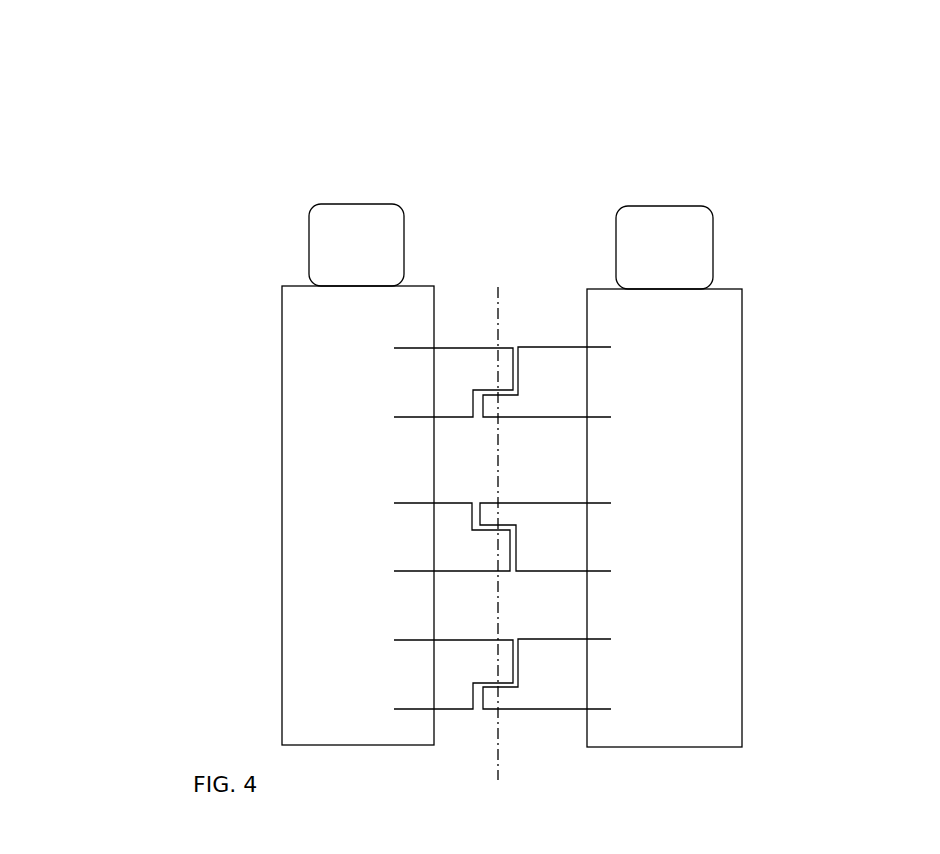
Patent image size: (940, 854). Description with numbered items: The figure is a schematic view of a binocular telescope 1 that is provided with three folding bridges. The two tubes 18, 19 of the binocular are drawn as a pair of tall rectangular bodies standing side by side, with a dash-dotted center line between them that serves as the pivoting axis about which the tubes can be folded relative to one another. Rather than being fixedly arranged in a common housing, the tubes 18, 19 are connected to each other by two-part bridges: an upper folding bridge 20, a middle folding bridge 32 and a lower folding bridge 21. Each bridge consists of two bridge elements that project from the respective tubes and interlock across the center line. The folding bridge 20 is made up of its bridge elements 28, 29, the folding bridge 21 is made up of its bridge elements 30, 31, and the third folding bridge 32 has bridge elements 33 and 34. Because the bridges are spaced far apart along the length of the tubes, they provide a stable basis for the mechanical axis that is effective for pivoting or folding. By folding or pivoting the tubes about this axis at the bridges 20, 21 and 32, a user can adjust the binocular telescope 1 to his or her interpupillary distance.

The binocular telescope 1 is at (748, 232).
The tube 18 is at (465, 548).
The tube 19 is at (550, 537).
The folding bridge 20 is at (470, 328).
The folding bridge 21 is at (572, 683).
The bridge element 28 is at (452, 382).
The bridge element 29 is at (556, 386).
The bridge element 30 is at (455, 660).
The bridge element 31 is at (563, 655).
The folding bridge 32 is at (453, 478).
The bridge element 33 is at (338, 533).
The bridge element 34 is at (693, 507).